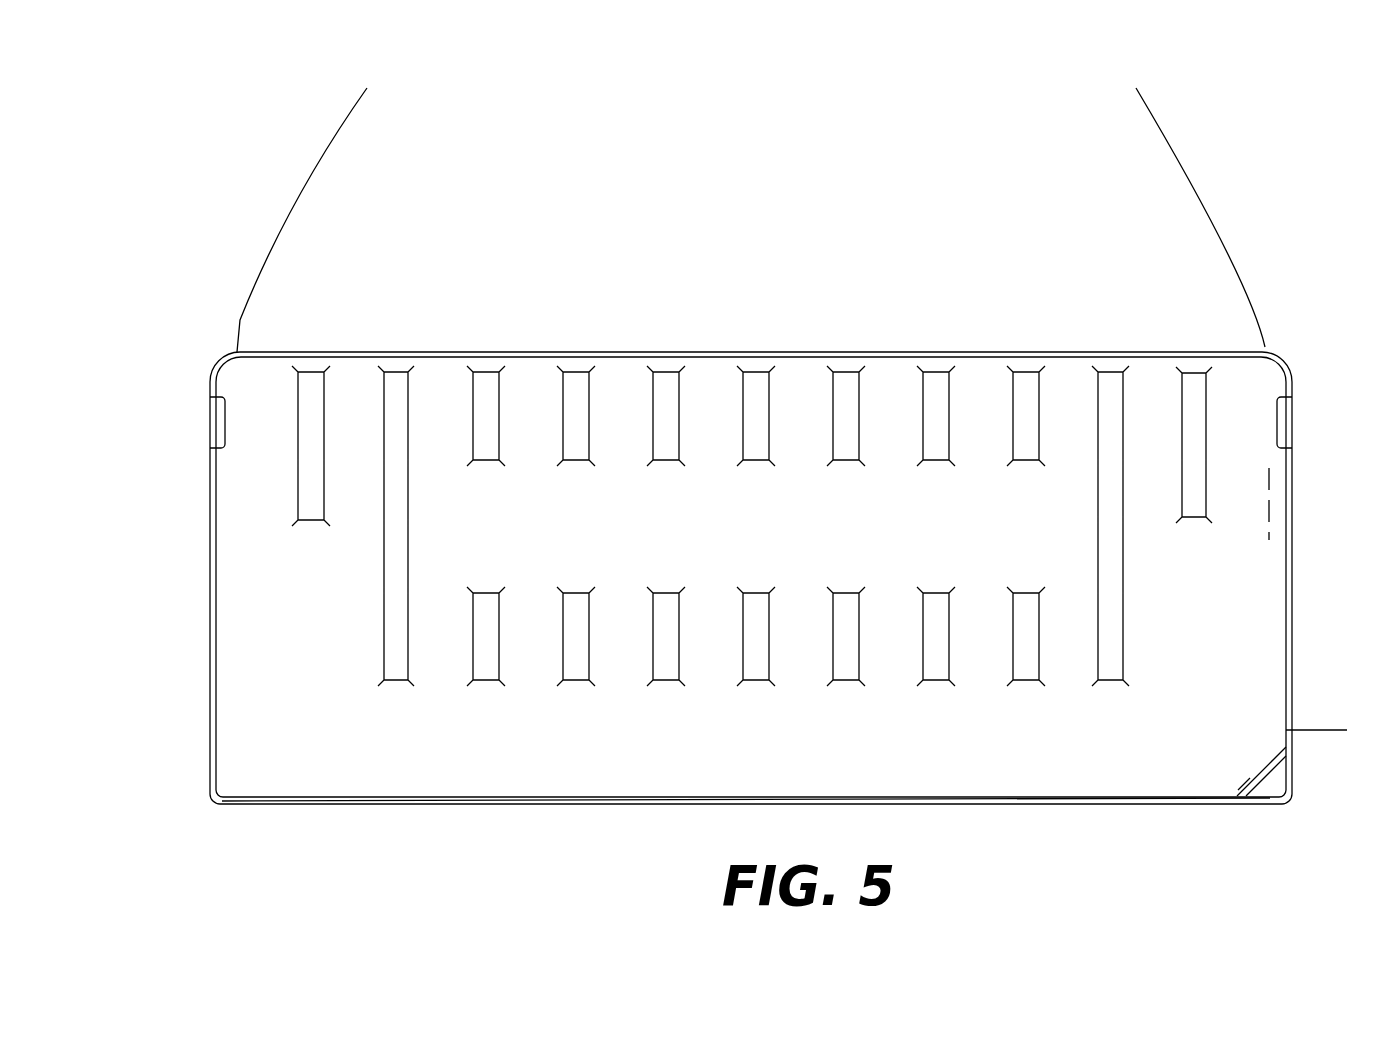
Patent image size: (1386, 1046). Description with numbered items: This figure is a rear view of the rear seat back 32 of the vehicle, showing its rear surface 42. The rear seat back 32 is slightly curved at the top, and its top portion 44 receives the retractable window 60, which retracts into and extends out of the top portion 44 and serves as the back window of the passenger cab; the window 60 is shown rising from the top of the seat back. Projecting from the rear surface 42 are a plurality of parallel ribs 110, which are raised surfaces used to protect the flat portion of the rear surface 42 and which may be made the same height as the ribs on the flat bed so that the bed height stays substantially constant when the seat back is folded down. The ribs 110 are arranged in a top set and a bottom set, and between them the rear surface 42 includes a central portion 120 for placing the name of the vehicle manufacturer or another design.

The rear seat back 32 is at (1283, 355).
The rear surface 42 is at (798, 367).
The top portion 44 is at (643, 358).
The retractable window 60 is at (1183, 193).
The parallel ribs 110 is at (1195, 427).
The central portion 120 is at (767, 530).